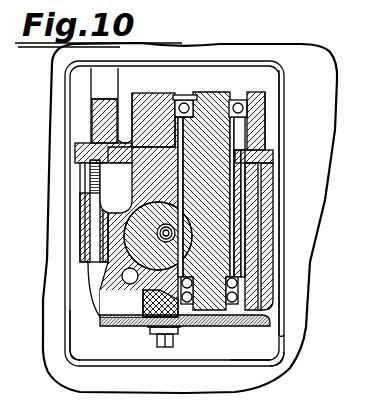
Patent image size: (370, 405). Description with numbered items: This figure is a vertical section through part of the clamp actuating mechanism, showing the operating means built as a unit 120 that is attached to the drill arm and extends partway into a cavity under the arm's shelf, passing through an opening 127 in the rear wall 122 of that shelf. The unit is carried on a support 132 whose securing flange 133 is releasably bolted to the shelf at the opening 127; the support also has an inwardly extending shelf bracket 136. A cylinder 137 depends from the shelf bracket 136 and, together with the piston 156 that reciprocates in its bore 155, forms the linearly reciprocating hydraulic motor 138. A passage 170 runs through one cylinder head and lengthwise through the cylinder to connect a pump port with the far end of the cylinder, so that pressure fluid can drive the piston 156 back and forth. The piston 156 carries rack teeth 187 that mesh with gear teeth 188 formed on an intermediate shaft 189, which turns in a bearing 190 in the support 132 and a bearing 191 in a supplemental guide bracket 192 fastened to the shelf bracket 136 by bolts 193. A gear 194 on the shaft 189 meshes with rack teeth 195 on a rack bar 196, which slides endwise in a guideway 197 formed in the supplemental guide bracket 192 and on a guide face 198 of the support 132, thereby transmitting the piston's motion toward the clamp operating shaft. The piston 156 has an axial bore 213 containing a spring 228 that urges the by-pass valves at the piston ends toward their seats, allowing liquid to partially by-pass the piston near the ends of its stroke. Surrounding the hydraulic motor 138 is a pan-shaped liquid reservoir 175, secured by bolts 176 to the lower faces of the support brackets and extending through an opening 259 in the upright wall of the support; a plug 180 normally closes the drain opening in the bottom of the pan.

The unit 120 is at (73, 82).
The rear wall 122 is at (296, 259).
The opening 127 is at (282, 358).
The support 132 is at (270, 132).
The securing flange 133 is at (73, 323).
The shelf bracket 136 is at (90, 137).
The cylinder 137 is at (150, 288).
The hydraulic motor 138 is at (110, 260).
The bore 155 is at (186, 324).
The piston 156 is at (125, 238).
The passage 170 is at (127, 282).
The liquid reservoir 175 is at (238, 330).
The bolts 176 is at (72, 141).
The plug 180 is at (168, 356).
The rack teeth 187 is at (196, 220).
The gear teeth 188 is at (237, 222).
The intermediate shaft 189 is at (210, 181).
The bearing 190 is at (244, 289).
The bearing 191 is at (229, 92).
The supplemental guide bracket 192 is at (262, 86).
The bolts 193 is at (157, 87).
The gear 194 is at (268, 114).
The rack teeth 195 is at (148, 130).
The rack bar 196 is at (162, 93).
The guideway 197 is at (174, 100).
The guide face 198 is at (145, 162).
The bore 213 is at (150, 213).
The spring 228 is at (158, 232).
The opening 259 is at (268, 326).